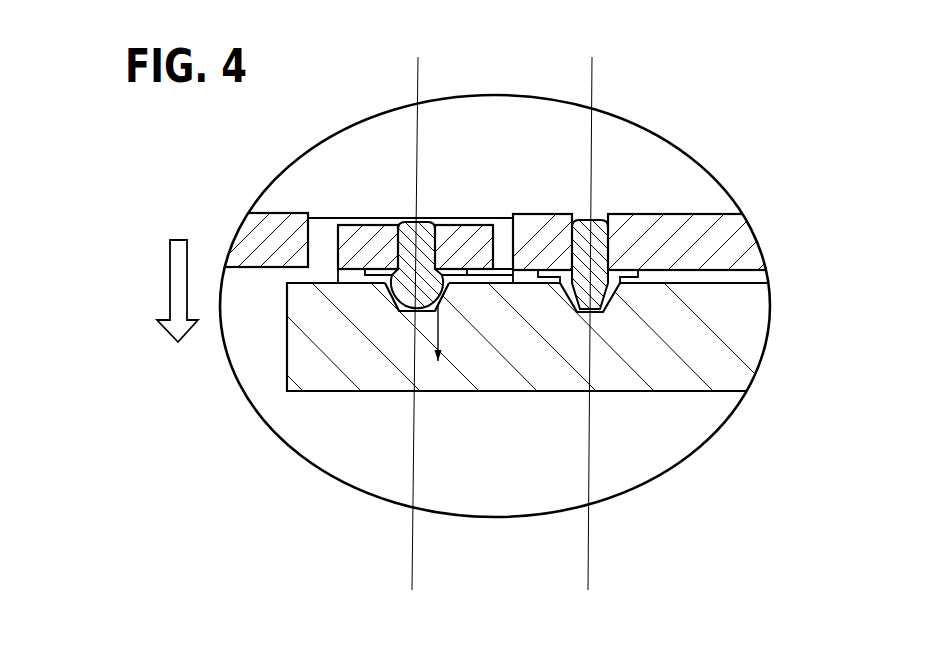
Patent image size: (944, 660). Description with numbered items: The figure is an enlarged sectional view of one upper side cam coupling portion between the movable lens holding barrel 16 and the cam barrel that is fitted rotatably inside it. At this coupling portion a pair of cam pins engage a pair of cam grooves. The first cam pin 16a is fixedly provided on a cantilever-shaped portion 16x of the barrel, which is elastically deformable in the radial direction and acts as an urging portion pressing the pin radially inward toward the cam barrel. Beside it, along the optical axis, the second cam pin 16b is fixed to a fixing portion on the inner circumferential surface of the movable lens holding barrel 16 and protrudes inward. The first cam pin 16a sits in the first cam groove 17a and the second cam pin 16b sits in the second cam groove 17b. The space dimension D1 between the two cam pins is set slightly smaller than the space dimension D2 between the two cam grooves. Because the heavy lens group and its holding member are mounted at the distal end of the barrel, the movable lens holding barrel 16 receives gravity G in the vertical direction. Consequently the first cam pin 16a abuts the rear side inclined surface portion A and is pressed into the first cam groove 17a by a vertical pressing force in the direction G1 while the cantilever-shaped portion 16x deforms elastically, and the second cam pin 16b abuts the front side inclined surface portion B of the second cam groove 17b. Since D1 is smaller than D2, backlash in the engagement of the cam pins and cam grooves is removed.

The movable lens holding barrel 16 is at (272, 225).
The cantilever-shaped portion 16x is at (365, 243).
The first cam pin 16a is at (433, 221).
The second cam pin 16b is at (607, 221).
The first cam groove 17a is at (391, 298).
The second cam groove 17b is at (616, 303).
The gravity G is at (170, 278).
The pressing force direction G1 is at (438, 304).
The space dimension between cam pins D1 is at (592, 72).
The space dimension between cam grooves D2 is at (588, 582).
The rear side inclined surface portion A is at (445, 299).
The front side inclined surface portion B is at (570, 301).